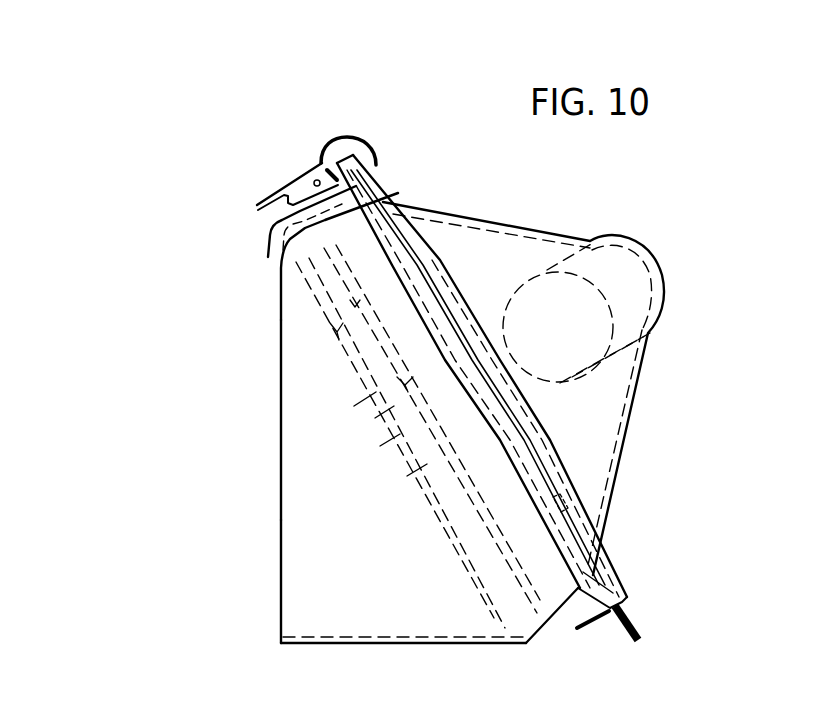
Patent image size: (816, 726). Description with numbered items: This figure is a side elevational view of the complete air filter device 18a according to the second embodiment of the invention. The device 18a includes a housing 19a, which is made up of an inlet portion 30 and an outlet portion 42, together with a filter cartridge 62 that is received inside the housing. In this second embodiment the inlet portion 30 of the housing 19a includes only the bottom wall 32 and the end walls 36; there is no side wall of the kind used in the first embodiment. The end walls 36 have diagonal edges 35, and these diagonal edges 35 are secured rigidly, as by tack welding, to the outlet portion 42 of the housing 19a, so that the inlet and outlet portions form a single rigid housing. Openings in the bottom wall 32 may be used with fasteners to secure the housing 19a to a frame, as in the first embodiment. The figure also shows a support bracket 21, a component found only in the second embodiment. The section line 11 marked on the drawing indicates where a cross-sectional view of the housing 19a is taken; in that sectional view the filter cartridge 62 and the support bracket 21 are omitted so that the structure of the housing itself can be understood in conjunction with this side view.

The section line 11— 11 is at (425, 72).
The air filter device 18a is at (280, 413).
The housing 19a is at (625, 552).
The support bracket 21 is at (278, 253).
The inlet portion 30 is at (279, 498).
The bottom wall 32 is at (315, 646).
The diagonal edges 35 is at (553, 507).
The end walls 36 is at (291, 573).
The outlet portion 42 is at (524, 230).
The filter cartridge 62 is at (373, 412).